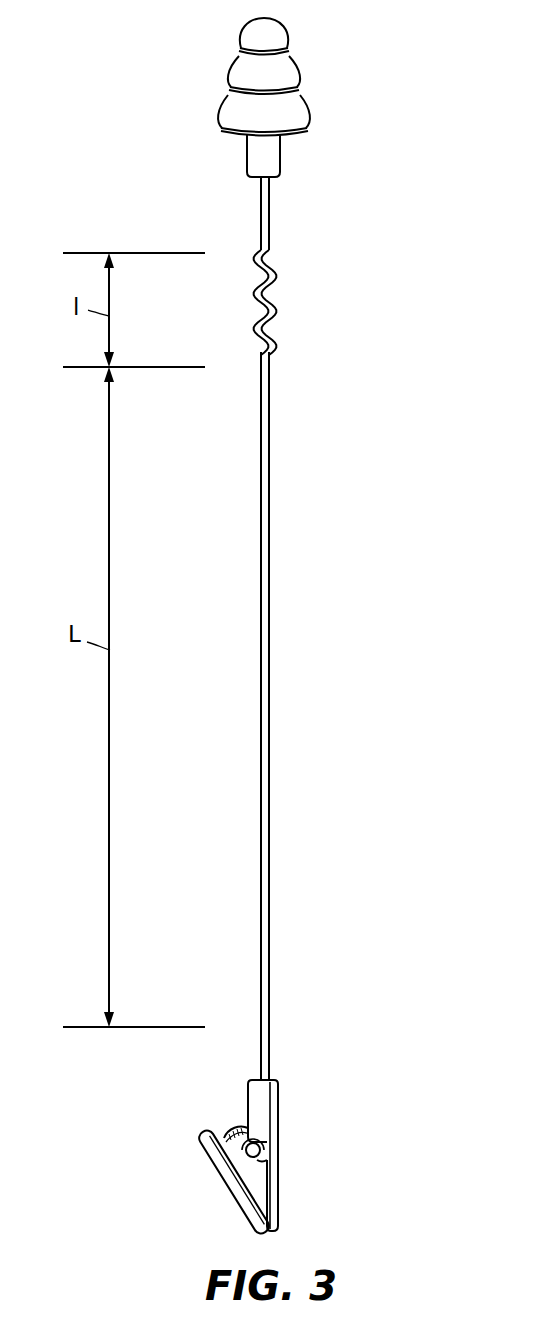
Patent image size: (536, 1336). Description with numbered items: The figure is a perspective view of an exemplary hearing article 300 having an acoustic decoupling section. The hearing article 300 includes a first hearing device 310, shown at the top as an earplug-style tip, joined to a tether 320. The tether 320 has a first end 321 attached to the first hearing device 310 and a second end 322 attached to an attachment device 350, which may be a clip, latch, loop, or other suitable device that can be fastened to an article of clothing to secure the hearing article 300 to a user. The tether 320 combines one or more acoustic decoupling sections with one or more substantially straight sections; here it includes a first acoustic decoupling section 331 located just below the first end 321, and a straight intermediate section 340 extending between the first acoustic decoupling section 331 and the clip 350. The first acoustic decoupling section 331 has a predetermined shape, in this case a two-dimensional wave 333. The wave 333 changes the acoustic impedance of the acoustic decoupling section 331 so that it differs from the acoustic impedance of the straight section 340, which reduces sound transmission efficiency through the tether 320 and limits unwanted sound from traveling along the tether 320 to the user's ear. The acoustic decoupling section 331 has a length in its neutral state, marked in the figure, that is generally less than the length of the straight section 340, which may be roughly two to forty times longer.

The hearing article 300 is at (157, 92).
The first hearing device 310 is at (283, 72).
The tether 320 is at (259, 515).
The first end 321 is at (263, 203).
The second end 322 is at (265, 1057).
The first acoustic decoupling section 331 is at (276, 298).
The two-dimensional wave 333 is at (270, 353).
The straight intermediate section 340 is at (269, 484).
The attachment device 350 is at (279, 1183).